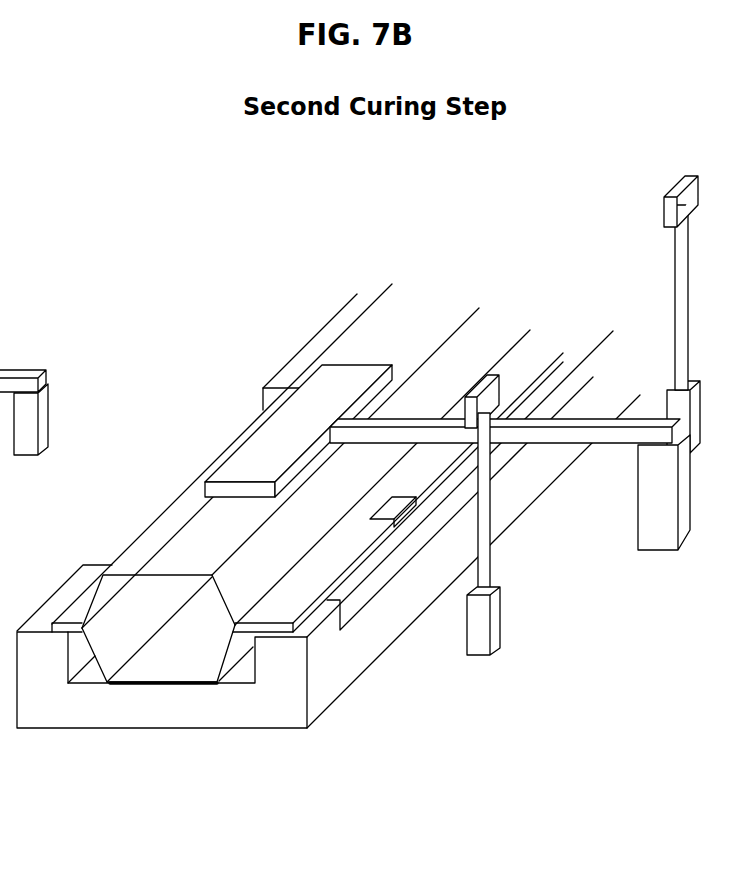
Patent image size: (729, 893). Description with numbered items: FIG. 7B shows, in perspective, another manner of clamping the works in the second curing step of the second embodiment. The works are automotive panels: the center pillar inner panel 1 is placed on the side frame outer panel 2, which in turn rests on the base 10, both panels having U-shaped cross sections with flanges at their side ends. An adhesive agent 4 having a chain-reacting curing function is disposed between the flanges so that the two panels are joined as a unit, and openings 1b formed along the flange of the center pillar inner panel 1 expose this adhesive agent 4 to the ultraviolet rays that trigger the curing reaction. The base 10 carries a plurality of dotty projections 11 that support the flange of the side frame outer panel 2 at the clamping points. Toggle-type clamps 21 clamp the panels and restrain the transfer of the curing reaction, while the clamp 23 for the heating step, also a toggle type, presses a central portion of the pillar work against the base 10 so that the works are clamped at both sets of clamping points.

The center pillar inner panel 1 is at (183, 552).
The opening 1b is at (391, 518).
The side frame outer panel 2 is at (186, 684).
The adhesive agent 4 is at (399, 507).
The base 10 is at (163, 729).
The projection 11 is at (42, 654).
The toggle-type clamp 21 is at (474, 394).
The clamp for the heating step 23 is at (306, 390).